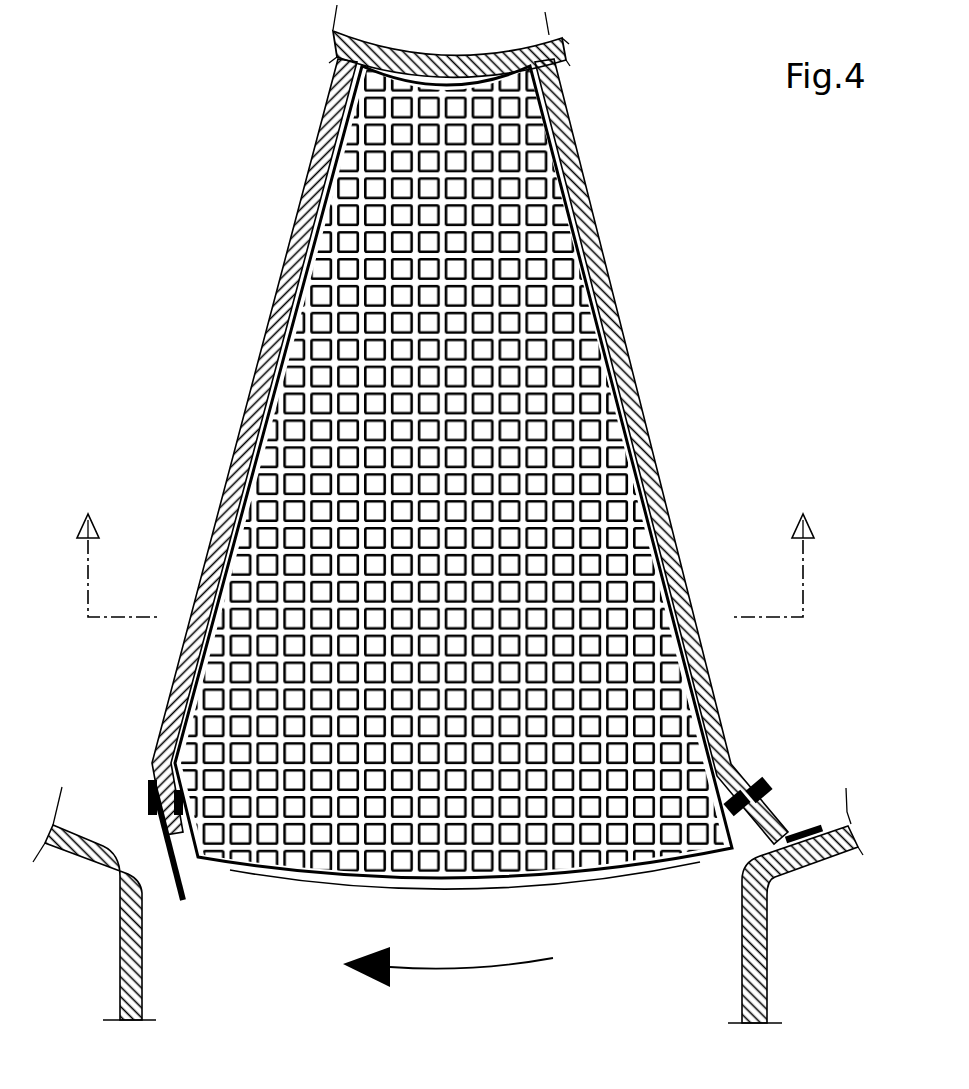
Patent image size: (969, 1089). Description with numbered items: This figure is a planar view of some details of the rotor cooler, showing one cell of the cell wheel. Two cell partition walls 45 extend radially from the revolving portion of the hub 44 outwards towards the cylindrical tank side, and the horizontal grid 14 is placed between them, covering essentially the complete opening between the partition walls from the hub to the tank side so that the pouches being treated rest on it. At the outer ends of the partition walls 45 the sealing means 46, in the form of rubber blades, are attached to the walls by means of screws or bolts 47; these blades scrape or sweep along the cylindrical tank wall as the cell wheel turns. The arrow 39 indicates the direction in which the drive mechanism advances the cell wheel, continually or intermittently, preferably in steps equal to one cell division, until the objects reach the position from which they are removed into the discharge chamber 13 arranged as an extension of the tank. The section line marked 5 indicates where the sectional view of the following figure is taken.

The grid 14 is at (283, 512).
The revolving portion of the hub 44 is at (456, 30).
The cell partition wall 45 is at (273, 308).
The sealing means 46 is at (182, 877).
The screws or bolts 47 is at (148, 802).
The arrow 39 is at (434, 966).
The discharge chamber 13 is at (597, 1013).
The section line V-V 5 is at (445, 542).